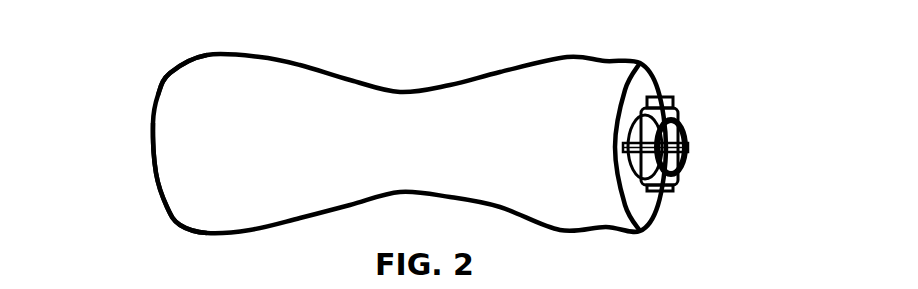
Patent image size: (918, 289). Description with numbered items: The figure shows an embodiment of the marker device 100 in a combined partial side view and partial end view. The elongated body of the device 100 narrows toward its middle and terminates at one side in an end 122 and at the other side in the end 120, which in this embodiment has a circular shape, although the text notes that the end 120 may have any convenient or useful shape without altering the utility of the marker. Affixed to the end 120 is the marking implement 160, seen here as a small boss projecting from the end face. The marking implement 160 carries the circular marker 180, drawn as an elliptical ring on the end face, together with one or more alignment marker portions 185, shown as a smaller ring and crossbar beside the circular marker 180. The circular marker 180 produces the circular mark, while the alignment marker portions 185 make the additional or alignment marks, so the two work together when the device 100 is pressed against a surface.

The marker device 100 is at (113, 50).
The first end of body 122 is at (156, 199).
The end 120 is at (663, 208).
The marking implement 160 is at (687, 100).
The circular marker 180 is at (688, 126).
The alignment marker portions 185 is at (690, 145).